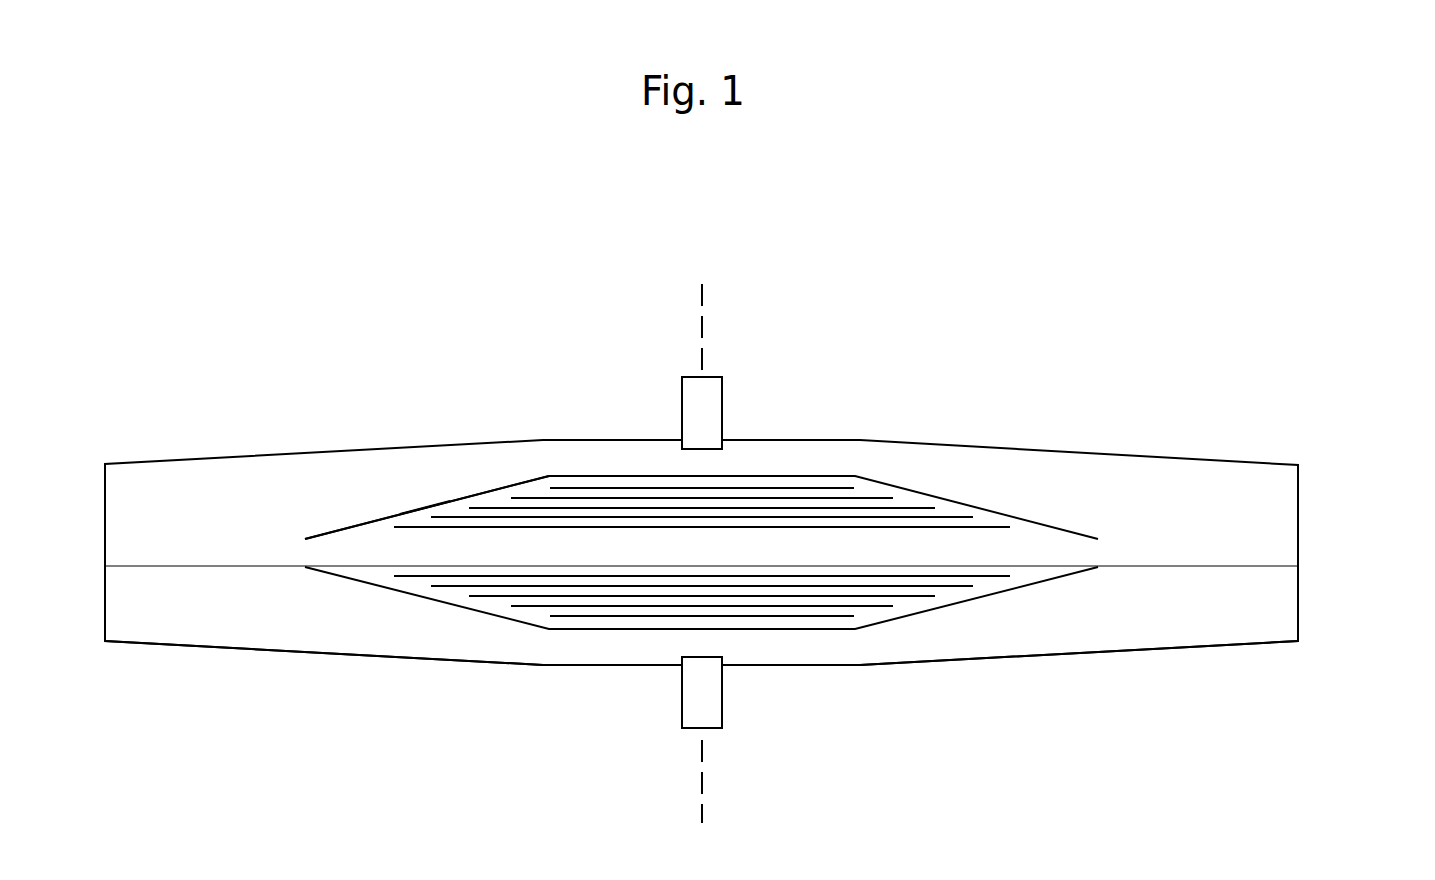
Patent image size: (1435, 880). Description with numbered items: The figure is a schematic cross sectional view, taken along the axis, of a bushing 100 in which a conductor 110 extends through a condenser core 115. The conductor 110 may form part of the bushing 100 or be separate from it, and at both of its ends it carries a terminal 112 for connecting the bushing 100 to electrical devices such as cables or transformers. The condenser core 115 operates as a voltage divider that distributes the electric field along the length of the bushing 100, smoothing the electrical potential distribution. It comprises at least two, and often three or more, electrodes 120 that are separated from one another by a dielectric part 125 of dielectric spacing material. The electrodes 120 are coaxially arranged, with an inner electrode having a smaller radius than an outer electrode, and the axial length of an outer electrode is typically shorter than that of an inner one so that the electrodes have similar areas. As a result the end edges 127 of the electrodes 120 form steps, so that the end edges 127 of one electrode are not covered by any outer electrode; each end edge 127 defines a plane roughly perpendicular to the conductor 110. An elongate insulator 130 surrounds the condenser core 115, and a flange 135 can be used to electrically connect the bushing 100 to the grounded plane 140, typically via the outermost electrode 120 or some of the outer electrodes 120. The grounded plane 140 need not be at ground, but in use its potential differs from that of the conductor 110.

The bushing 100 is at (1003, 821).
The conductor 110 is at (1210, 565).
The terminal 112 is at (1298, 548).
The condenser core 115 is at (966, 504).
The electrodes 120 is at (487, 596).
The dielectric part 125 is at (497, 500).
The end edges 127 is at (415, 511).
The elongate insulator 130 is at (1103, 653).
The flange 135 is at (722, 700).
The grounded plane 140 is at (700, 805).